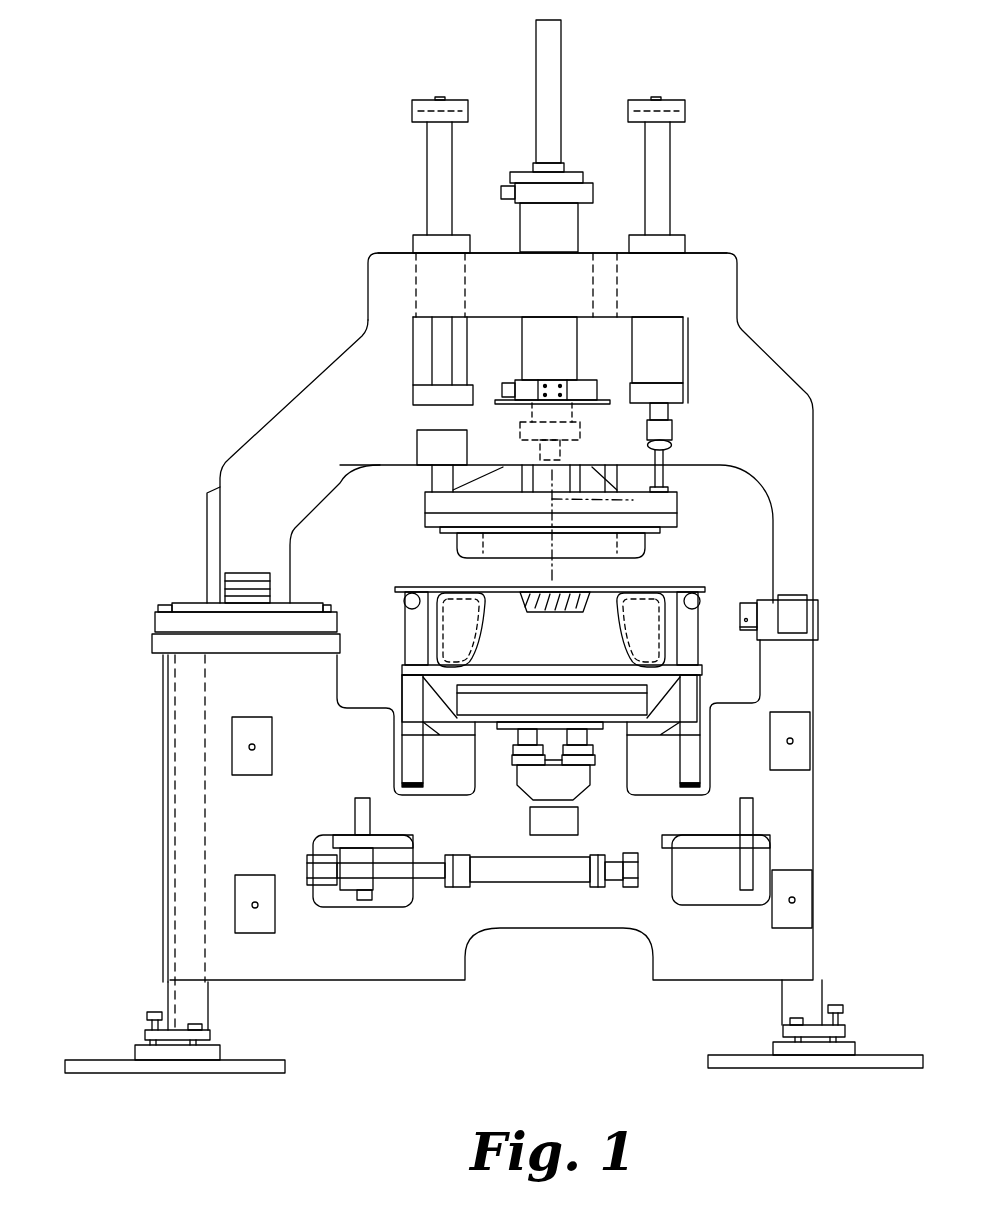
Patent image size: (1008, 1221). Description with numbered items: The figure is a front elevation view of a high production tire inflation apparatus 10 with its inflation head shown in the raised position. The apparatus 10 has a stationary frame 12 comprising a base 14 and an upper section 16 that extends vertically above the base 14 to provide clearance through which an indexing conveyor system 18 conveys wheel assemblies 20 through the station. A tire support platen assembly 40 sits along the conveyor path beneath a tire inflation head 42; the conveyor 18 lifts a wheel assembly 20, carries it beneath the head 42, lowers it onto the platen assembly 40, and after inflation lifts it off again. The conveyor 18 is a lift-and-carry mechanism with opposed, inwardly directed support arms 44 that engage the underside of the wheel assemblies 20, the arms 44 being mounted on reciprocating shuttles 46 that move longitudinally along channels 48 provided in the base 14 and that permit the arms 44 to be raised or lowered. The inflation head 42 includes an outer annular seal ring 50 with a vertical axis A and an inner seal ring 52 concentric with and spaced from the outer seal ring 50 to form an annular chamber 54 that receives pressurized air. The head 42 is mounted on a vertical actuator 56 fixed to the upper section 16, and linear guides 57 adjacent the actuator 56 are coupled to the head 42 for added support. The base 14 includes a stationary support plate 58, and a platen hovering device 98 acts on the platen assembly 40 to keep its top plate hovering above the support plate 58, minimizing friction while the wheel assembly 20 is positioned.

The tire inflation apparatus 10 is at (300, 322).
The stationary frame 12 is at (205, 548).
The base 14 is at (160, 897).
The upper section 16 is at (280, 405).
The indexing conveyor system 18 is at (395, 662).
The wheel assembly 20 is at (648, 583).
The tire support platen assembly 40 is at (645, 697).
The tire inflation head 42 is at (680, 497).
The support arms 44 is at (437, 672).
The reciprocating shuttles 46 is at (408, 768).
The channels 48 is at (428, 795).
The outer annular seal ring 50 is at (445, 545).
The inner seal ring 52 is at (465, 528).
The annular chamber 54 is at (475, 552).
The vertical actuator 56 is at (565, 232).
The linear guides 57 is at (413, 243).
The stationary support plate 58 is at (490, 722).
The platen hovering device 98 is at (530, 787).